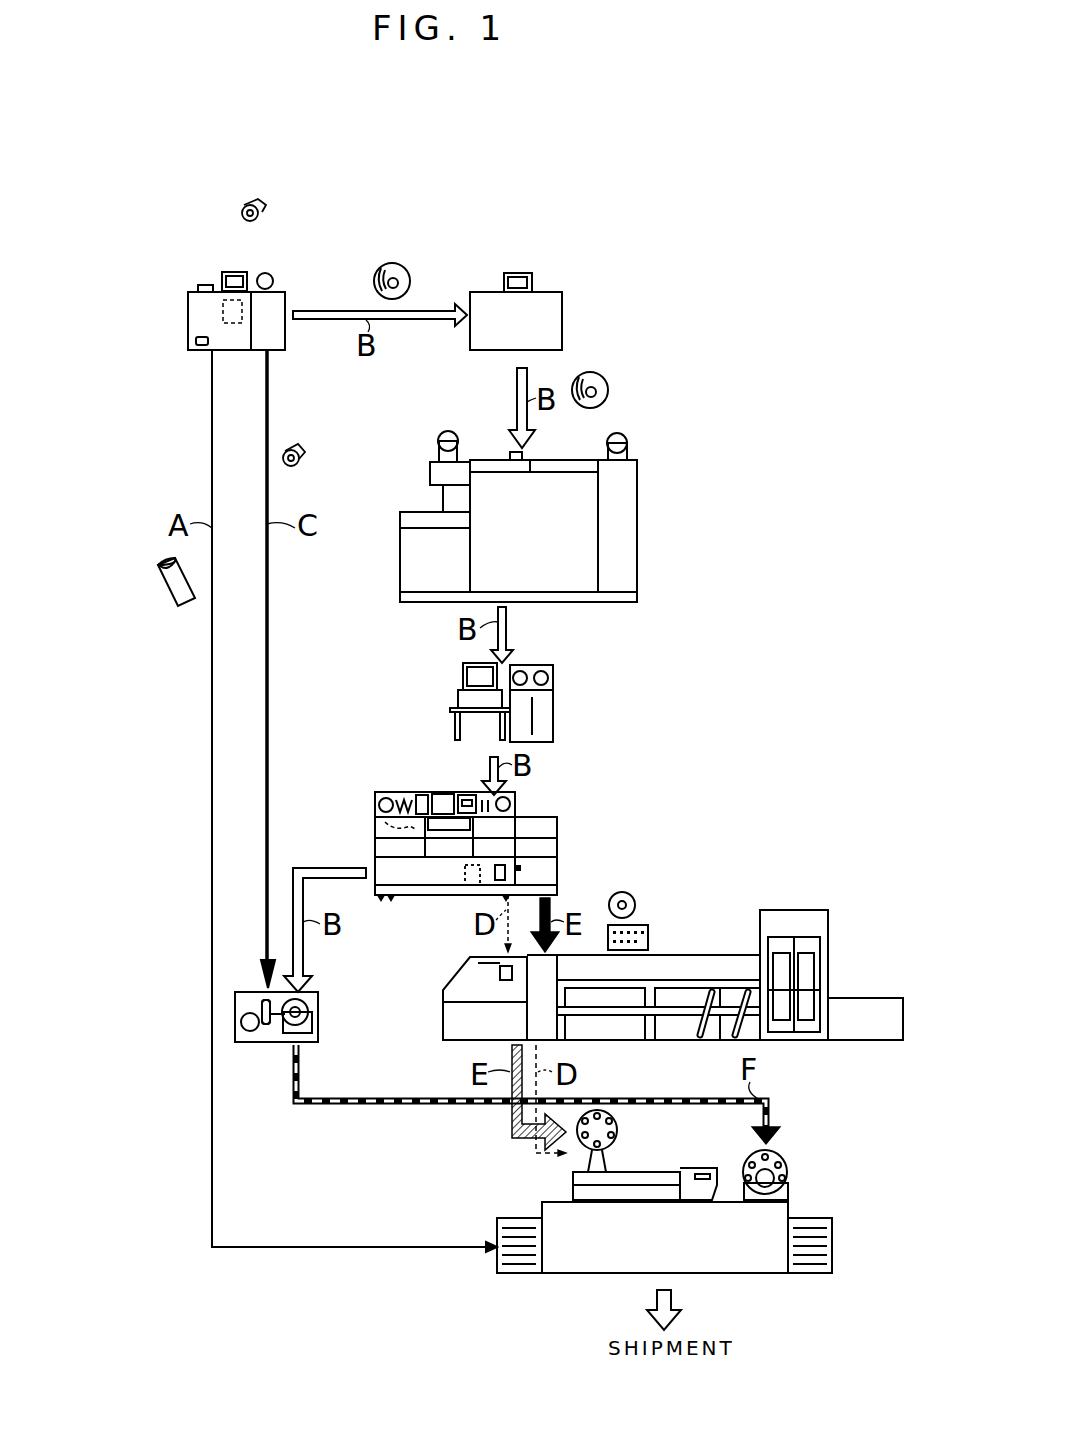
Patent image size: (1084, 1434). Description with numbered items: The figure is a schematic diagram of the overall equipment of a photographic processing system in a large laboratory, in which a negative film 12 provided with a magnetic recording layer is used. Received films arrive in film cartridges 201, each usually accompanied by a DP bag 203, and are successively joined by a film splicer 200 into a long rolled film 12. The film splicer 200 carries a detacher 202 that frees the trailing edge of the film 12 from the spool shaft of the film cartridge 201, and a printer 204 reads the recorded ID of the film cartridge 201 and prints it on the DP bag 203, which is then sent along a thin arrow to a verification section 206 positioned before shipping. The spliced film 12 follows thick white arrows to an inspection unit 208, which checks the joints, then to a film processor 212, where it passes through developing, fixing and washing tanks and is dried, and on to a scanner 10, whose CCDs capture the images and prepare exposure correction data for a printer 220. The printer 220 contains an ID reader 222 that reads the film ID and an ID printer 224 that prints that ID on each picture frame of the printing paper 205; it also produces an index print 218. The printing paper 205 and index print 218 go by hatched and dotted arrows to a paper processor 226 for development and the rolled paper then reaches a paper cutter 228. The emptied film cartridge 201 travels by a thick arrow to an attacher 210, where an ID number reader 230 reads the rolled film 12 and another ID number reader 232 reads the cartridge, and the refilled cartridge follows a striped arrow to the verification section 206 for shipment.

The scanner 10 is at (562, 683).
The negative film 12 is at (276, 203).
The film splicer 200 is at (193, 283).
The film cartridge 201 is at (242, 208).
The detacher 202 is at (282, 283).
The DP bag 203 is at (183, 612).
The printer 204 is at (223, 311).
The printing paper 205 is at (645, 893).
The verification section 206 is at (590, 1272).
The inspection unit 208 is at (568, 280).
The attacher 210 is at (322, 990).
The film processor 212 is at (643, 468).
The index print 218 is at (642, 925).
The printer 220 is at (570, 848).
The ID reader 222 is at (385, 822).
The ID printer 224 is at (472, 890).
The paper processor 226 is at (683, 950).
The paper cutter 228 is at (642, 1172).
The ID number reader 230 is at (262, 1010).
The ID number reader 232 is at (315, 1022).